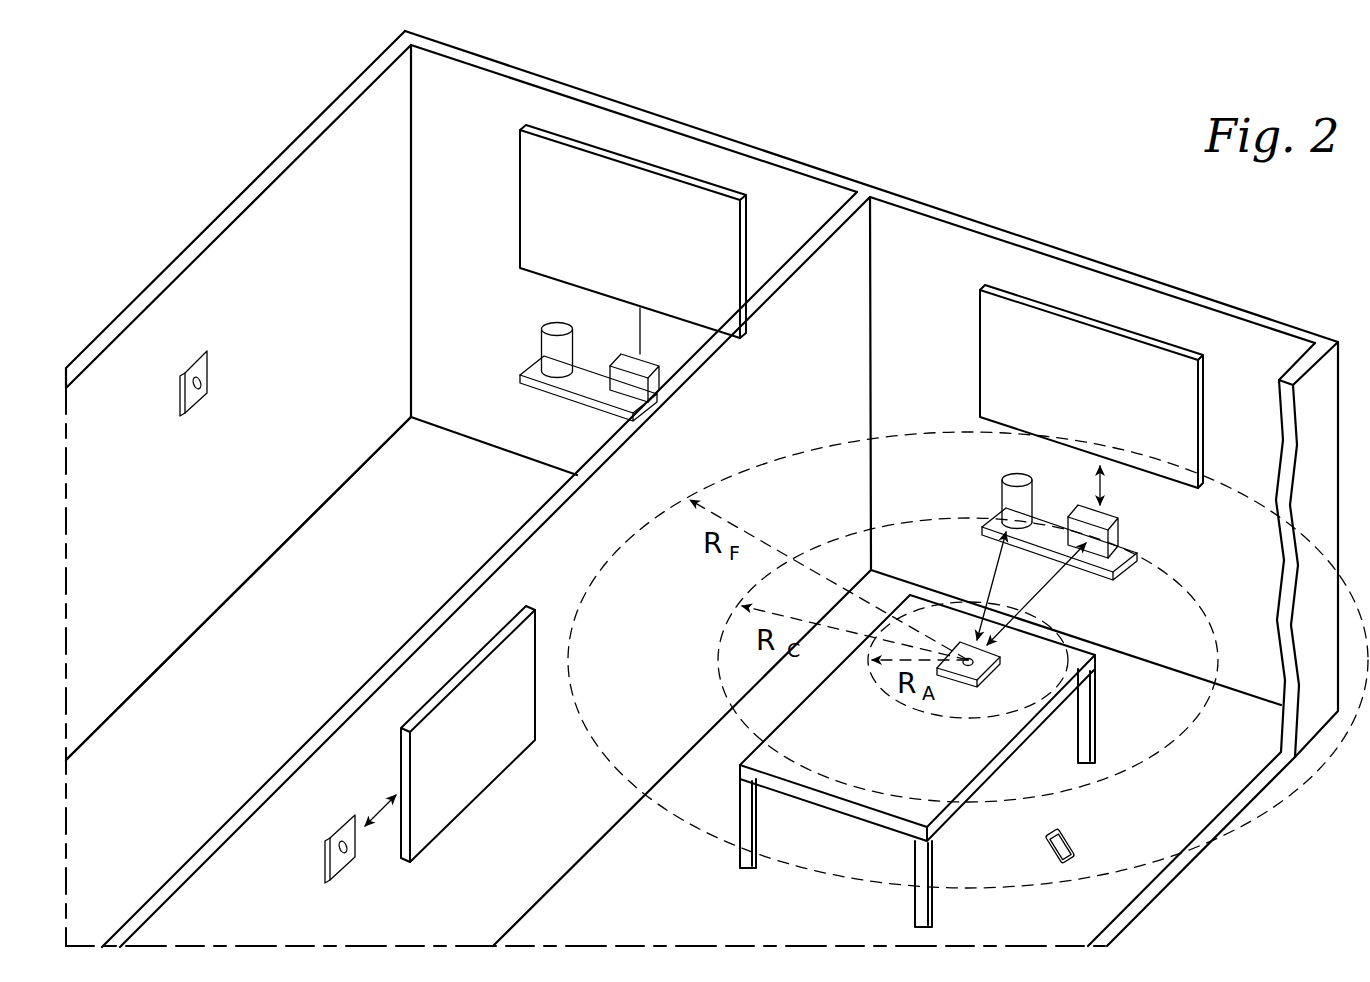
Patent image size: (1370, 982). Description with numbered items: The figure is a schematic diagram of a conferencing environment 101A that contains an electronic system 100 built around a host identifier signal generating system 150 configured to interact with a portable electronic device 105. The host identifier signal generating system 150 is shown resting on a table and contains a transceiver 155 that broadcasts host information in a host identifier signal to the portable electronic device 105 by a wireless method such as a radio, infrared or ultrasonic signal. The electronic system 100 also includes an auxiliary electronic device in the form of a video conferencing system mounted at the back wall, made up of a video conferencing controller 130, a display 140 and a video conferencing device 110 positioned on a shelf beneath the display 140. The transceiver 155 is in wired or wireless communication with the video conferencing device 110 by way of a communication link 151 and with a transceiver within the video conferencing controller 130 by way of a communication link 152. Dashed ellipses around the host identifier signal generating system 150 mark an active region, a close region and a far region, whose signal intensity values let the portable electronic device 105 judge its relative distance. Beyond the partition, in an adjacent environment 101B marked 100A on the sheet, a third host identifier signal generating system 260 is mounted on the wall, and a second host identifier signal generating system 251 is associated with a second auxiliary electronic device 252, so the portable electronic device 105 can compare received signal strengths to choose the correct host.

The electronic system 100 is at (835, 410).
The second room 100A is at (500, 225).
The conferencing environment 101A is at (1059, 394).
The adjacent environment 101B is at (648, 153).
The portable electronic device 105 is at (1070, 835).
The video conferencing device 110 is at (997, 492).
The video conferencing controller 130 is at (1120, 531).
The display 140 is at (995, 352).
The host identifier signal generating system 150 is at (991, 701).
The communication link 151 is at (997, 553).
The communication link 152 is at (1046, 582).
The transceiver 155 is at (957, 688).
The second host identifier signal generating system 251 is at (342, 868).
The second auxiliary electronic device 252 is at (483, 790).
The third host identifier signal generating system 260 is at (197, 402).